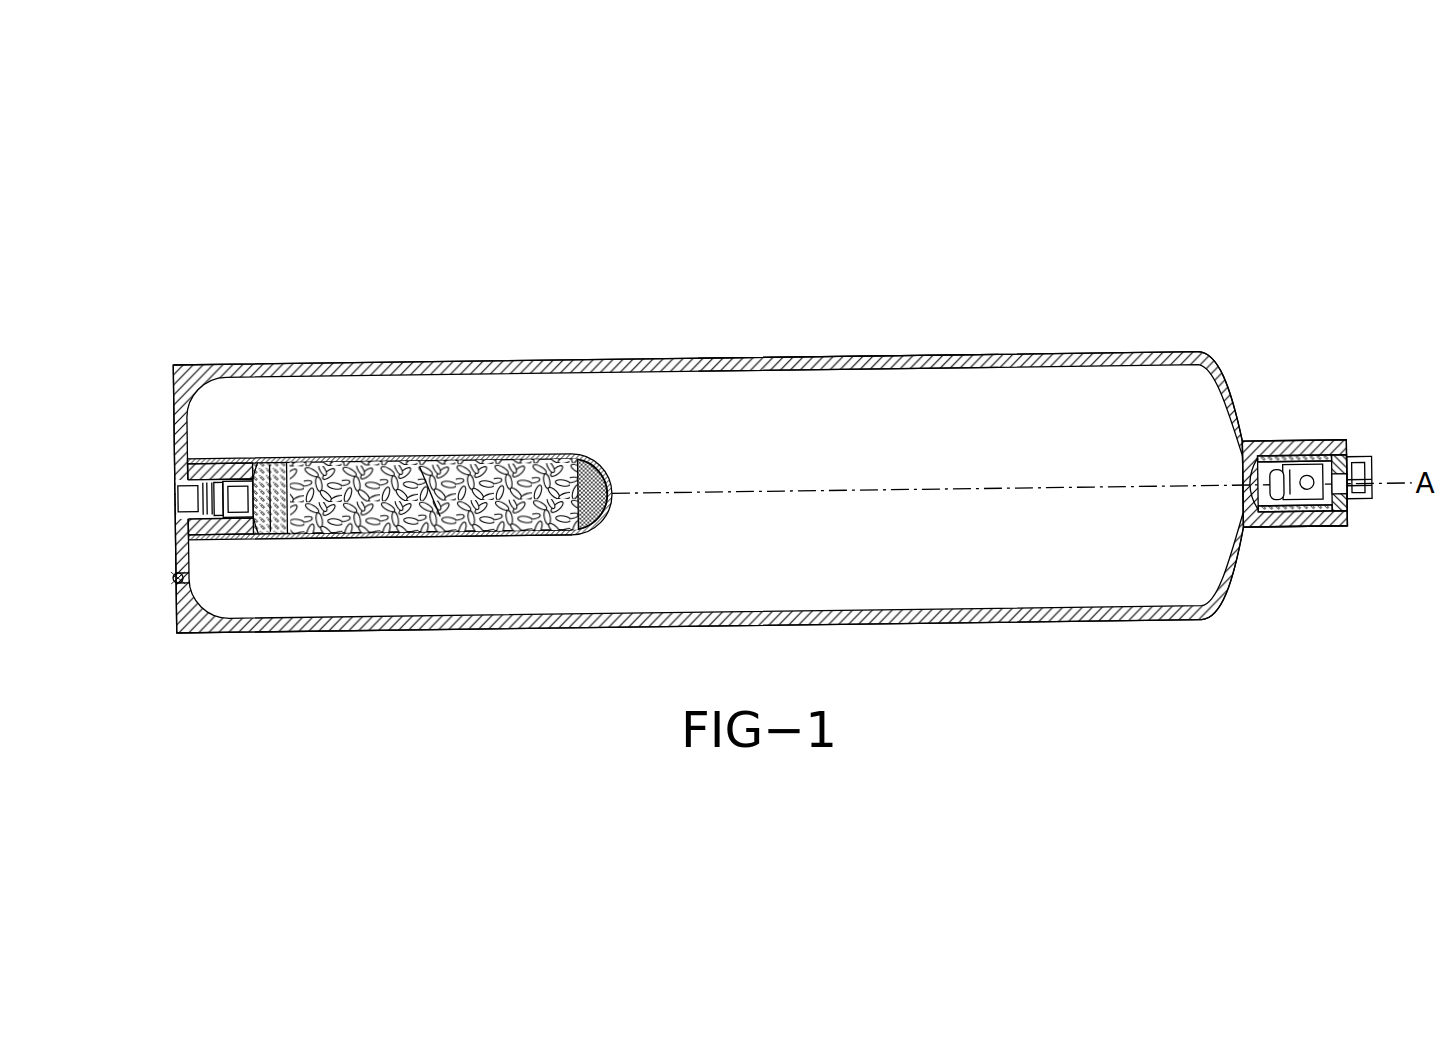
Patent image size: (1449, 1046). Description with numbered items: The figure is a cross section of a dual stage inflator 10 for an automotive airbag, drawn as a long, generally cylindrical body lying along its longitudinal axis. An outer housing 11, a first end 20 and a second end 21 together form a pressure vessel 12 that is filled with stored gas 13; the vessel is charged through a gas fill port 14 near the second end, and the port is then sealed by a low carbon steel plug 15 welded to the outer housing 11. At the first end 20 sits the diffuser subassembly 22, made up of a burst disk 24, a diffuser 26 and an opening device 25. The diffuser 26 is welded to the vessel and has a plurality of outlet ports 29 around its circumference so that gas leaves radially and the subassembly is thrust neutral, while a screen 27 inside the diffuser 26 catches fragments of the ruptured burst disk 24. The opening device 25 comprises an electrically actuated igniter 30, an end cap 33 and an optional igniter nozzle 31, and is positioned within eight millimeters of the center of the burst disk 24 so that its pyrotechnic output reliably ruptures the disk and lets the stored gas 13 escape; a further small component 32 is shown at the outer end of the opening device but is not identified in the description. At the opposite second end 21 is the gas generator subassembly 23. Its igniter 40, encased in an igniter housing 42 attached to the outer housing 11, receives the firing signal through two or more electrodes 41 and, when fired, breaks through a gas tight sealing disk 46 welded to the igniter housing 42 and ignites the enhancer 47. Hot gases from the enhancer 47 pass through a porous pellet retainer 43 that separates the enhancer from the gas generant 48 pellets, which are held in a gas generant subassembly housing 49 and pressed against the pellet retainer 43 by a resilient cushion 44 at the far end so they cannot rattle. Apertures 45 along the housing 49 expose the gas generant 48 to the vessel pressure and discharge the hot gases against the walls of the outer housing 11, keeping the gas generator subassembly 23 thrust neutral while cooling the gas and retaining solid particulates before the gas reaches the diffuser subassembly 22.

The dual stage inflator 10 is at (791, 260).
The outer housing 11 is at (1063, 350).
The pressure vessel 12 is at (925, 412).
The stored gas 13 is at (995, 570).
The gas fill port 14 is at (187, 580).
The plug 15 is at (175, 585).
The first end 20 is at (1289, 293).
The second end 21 is at (150, 306).
The diffuser subassembly 22 is at (1347, 385).
The gas generator subassembly 23 is at (594, 545).
The burst disk 24 is at (1243, 490).
The opening device 25 is at (1340, 527).
The diffuser 26 is at (1272, 527).
The screen 27 is at (1290, 517).
The outlet ports 29 is at (1308, 517).
The igniter 30 is at (1335, 462).
The igniter nozzle 31 is at (1305, 470).
The outlet fitting 32 is at (1355, 467).
The end cap 33 is at (1346, 527).
The igniter 40 is at (217, 488).
The electrodes 41 is at (190, 505).
The igniter housing 42 is at (232, 486).
The pellet retainer 43 is at (295, 472).
The cushion 44 is at (598, 478).
The apertures 45 is at (376, 532).
The sealing disk 46 is at (278, 528).
The enhancer 47 is at (278, 500).
The gas generant 48 is at (510, 473).
The gas generant subassembly housing 49 is at (485, 540).